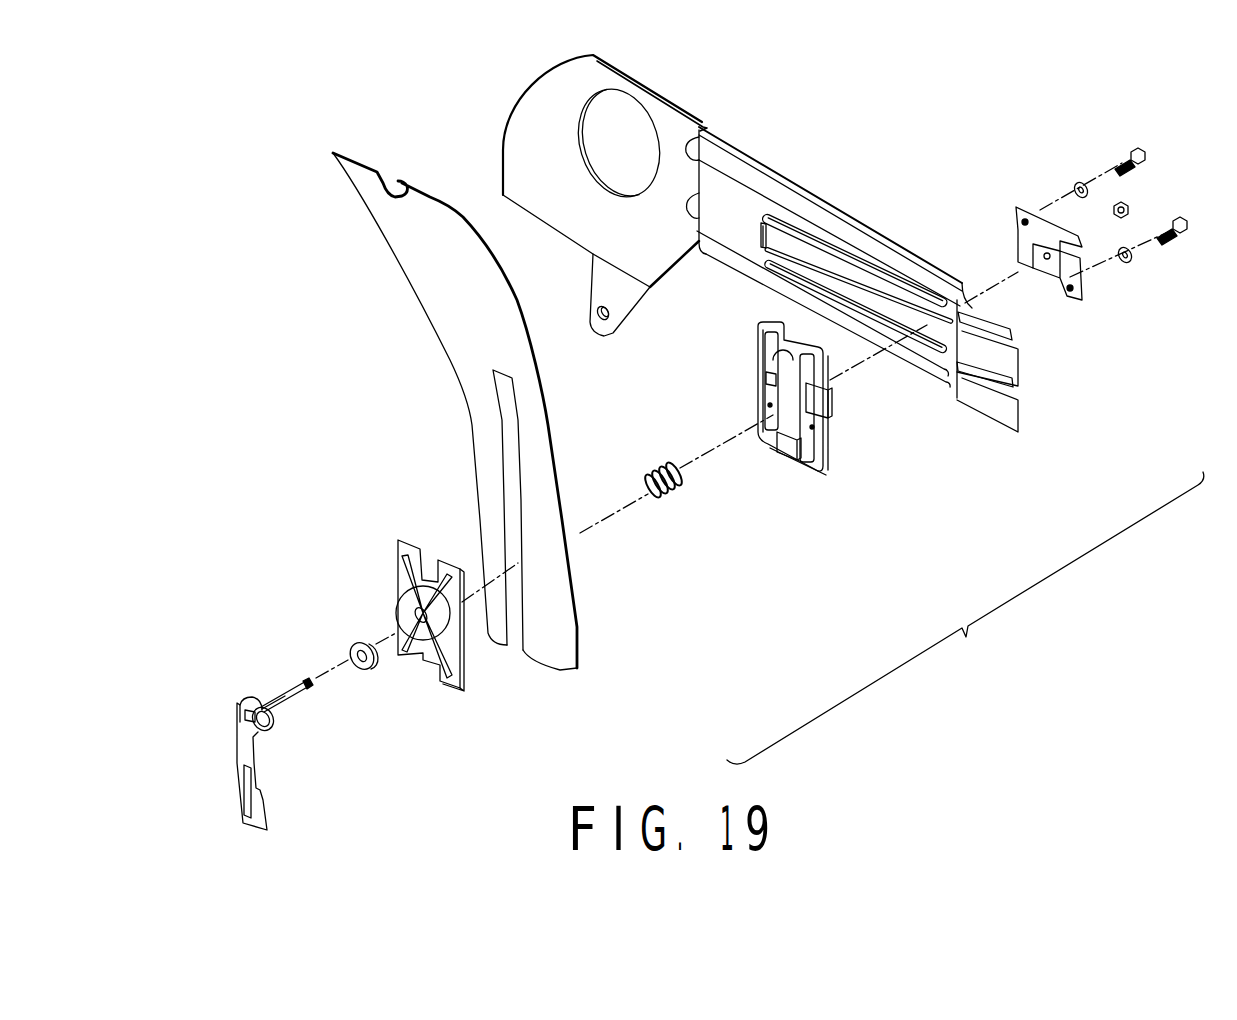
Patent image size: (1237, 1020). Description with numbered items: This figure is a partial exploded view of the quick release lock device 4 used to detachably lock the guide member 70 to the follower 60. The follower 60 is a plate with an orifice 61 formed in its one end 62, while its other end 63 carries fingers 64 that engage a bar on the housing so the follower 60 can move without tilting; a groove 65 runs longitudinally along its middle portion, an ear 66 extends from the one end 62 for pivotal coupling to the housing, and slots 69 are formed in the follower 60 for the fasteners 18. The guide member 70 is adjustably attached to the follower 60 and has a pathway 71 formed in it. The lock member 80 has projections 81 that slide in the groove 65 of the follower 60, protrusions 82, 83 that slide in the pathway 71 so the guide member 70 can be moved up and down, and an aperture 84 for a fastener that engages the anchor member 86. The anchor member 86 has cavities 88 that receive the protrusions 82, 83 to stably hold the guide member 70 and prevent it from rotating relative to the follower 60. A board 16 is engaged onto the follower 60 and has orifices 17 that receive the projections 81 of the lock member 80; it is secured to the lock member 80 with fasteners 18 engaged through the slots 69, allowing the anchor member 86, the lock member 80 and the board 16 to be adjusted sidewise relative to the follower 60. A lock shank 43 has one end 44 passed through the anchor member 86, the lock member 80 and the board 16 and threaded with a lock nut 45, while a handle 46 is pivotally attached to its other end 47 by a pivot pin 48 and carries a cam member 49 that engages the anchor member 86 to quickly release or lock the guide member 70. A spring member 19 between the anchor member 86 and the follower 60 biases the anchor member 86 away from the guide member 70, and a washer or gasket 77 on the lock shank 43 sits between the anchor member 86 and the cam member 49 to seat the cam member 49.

The quick release lock device 4 is at (256, 727).
The board 16 is at (1049, 250).
The orifices 17 is at (1063, 295).
The fasteners 18 is at (1170, 220).
The spring member 19 is at (667, 507).
The lock shank 43 is at (287, 706).
The one end of lock shank 44 is at (267, 629).
The lock nut 45 is at (1128, 208).
The handle 46 is at (248, 798).
The other end of lock shank 47 is at (248, 700).
The pivot pin 48 is at (267, 728).
The cam member 49 is at (309, 758).
The follower 60 is at (884, 307).
The orifice 61 is at (595, 121).
The one end of follower 62 is at (648, 88).
The other end of follower 63 is at (1013, 436).
The fingers 64 is at (1012, 343).
The groove 65 is at (937, 337).
The ear 66 is at (598, 292).
The slots 69 is at (813, 283).
The guide member 70 is at (450, 336).
The pathway 71 is at (515, 648).
The washer or gasket 77 is at (360, 640).
The lock member 80 is at (802, 419).
The projections 81 is at (830, 407).
The protrusion 82 is at (782, 452).
The protrusion 83 is at (790, 346).
The aperture 84 is at (773, 417).
The anchor member 86 is at (419, 639).
The cavities 88 is at (460, 647).